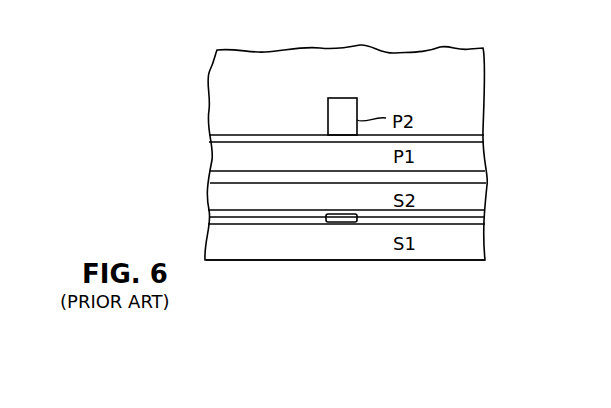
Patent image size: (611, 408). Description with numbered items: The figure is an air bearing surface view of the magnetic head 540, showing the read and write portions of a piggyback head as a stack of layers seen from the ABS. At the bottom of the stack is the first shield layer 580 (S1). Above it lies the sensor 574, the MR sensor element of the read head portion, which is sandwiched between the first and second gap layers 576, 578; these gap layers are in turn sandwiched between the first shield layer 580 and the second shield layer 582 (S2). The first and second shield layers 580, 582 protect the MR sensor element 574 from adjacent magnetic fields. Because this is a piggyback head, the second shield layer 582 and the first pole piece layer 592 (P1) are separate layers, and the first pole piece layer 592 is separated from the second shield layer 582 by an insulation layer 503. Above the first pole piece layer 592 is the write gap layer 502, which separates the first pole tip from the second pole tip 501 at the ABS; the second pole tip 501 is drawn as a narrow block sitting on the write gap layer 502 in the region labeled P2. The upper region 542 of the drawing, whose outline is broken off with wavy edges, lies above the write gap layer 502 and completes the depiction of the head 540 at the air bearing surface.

The magnetic head 540 is at (502, 61).
The upper region / return pole layer 542 is at (218, 73).
The second pole tip 501 is at (339, 106).
The write gap layer 502 is at (271, 135).
The first pole piece layer 592 is at (217, 158).
The insulation layer 503 is at (477, 180).
The second shield layer 582 is at (212, 203).
The second gap layer 578 is at (450, 218).
The first gap layer 576 is at (262, 225).
The sensor 574 is at (342, 223).
The first shield layer 580 is at (477, 245).